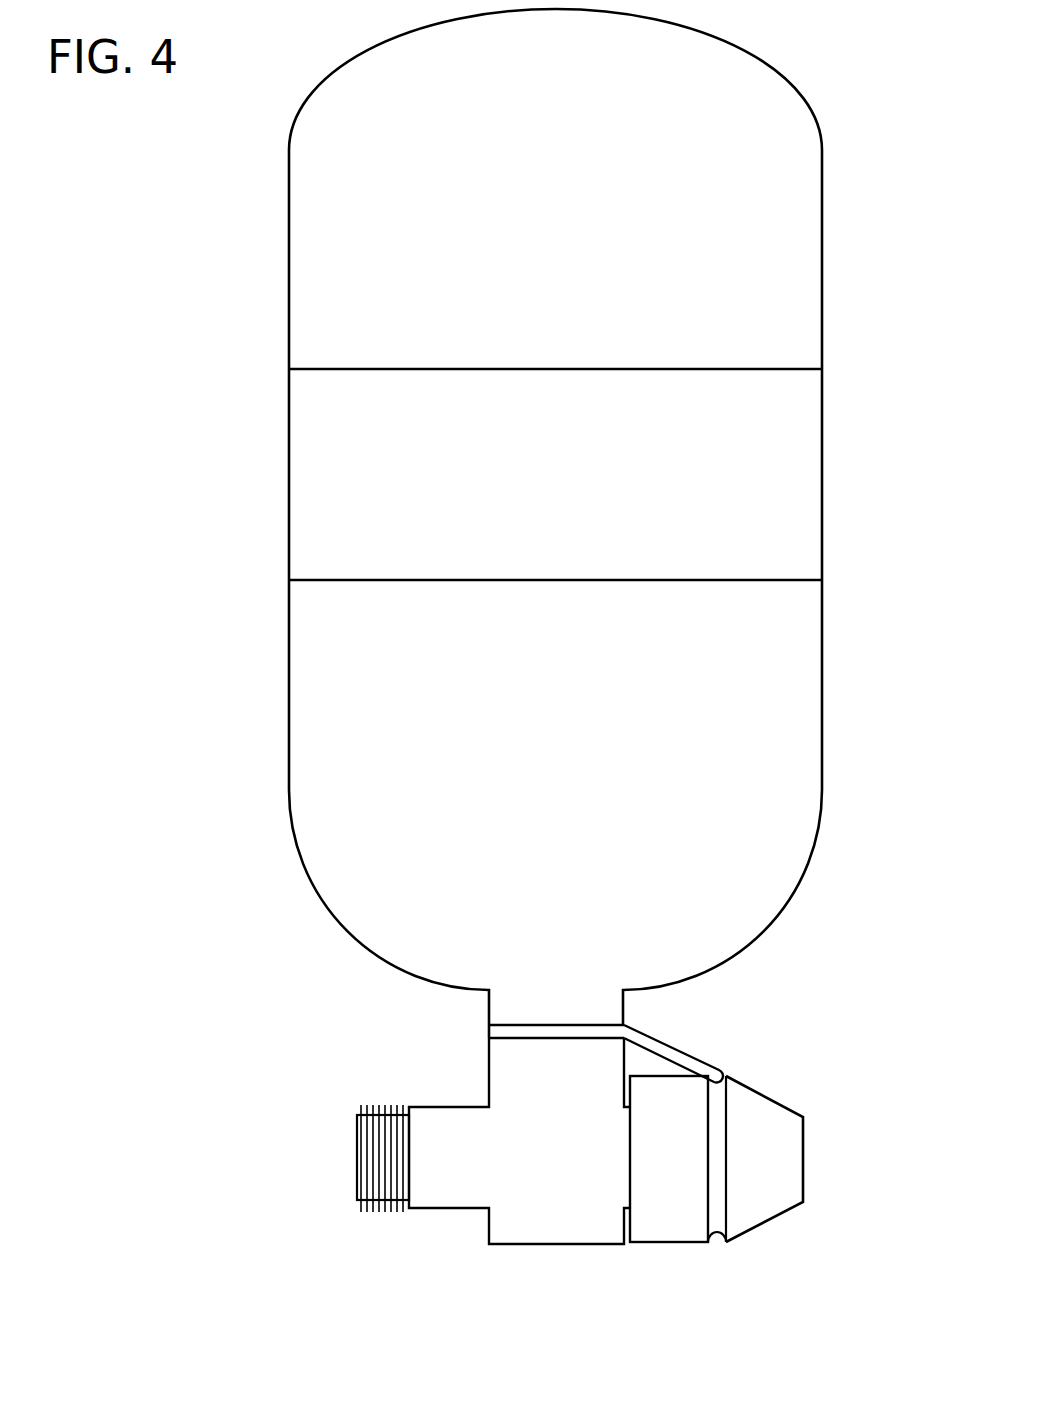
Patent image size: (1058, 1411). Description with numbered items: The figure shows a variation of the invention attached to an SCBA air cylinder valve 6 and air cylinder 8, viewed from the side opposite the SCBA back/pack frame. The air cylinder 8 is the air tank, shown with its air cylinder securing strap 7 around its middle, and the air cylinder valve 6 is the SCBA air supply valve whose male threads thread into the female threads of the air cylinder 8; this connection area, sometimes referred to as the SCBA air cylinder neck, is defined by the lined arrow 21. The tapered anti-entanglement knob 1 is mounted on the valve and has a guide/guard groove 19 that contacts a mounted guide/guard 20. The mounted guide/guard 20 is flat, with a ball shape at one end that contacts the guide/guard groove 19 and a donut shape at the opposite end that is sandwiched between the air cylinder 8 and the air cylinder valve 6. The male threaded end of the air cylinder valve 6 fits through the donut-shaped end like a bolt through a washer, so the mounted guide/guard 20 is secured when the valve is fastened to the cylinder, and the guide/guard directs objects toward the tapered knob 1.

The tapered anti-entanglement knob 1 is at (767, 1168).
The air cylinder valve 6 is at (523, 1160).
The air cylinder securing strap 7 is at (360, 490).
The air cylinder 8 is at (475, 250).
The guide/guard groove 19 is at (718, 1222).
The mounted guide/guard 20 is at (667, 1048).
The lined arrow 21 is at (458, 1035).